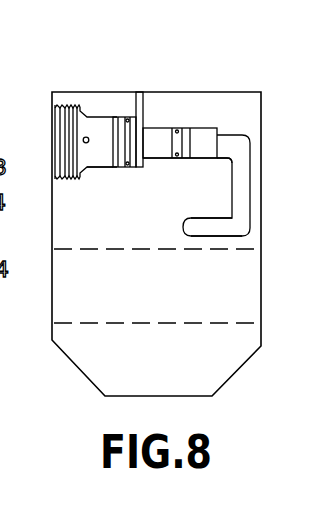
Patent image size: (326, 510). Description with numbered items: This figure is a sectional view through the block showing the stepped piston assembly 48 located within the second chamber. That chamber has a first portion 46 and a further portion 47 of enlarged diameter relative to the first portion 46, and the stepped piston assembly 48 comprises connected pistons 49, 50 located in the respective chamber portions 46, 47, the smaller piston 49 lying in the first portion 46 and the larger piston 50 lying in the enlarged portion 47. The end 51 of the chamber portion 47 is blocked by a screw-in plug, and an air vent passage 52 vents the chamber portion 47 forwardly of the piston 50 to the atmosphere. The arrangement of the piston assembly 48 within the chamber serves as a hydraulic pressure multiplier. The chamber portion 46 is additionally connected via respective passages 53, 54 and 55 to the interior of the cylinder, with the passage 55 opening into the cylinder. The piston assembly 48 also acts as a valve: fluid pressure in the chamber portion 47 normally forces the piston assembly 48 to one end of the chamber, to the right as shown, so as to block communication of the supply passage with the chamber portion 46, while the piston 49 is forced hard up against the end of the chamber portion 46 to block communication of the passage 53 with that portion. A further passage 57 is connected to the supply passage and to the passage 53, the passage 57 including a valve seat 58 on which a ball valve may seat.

The first portion 46 is at (191, 160).
The further portion 47 is at (100, 170).
The stepped piston assembly 48 is at (153, 161).
The piston 49 is at (202, 128).
The piston 50 is at (127, 117).
The end 51 is at (53, 127).
The air vent passage 52 is at (140, 92).
The passage 53 is at (240, 152).
The passage 54 is at (221, 232).
The passage 55 is at (191, 237).
The further passage 57 is at (217, 503).
The valve seat 58 is at (146, 503).